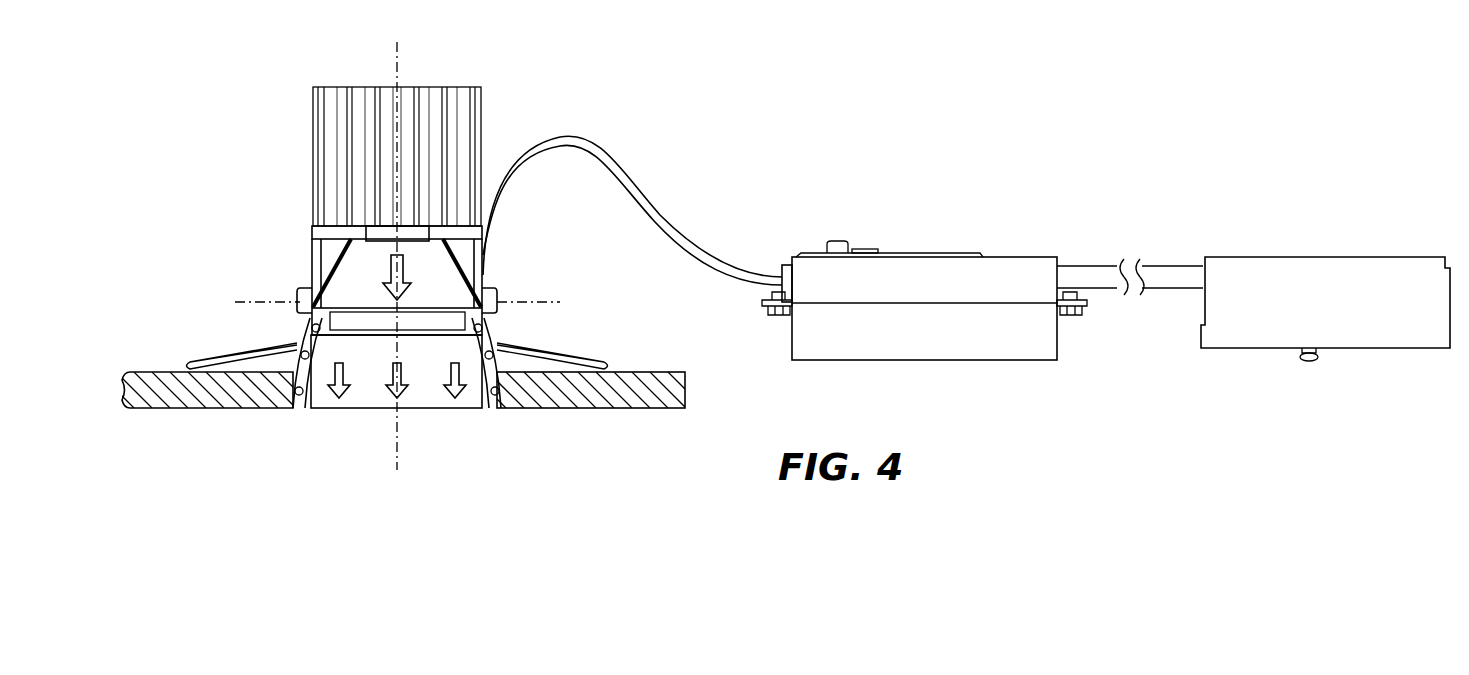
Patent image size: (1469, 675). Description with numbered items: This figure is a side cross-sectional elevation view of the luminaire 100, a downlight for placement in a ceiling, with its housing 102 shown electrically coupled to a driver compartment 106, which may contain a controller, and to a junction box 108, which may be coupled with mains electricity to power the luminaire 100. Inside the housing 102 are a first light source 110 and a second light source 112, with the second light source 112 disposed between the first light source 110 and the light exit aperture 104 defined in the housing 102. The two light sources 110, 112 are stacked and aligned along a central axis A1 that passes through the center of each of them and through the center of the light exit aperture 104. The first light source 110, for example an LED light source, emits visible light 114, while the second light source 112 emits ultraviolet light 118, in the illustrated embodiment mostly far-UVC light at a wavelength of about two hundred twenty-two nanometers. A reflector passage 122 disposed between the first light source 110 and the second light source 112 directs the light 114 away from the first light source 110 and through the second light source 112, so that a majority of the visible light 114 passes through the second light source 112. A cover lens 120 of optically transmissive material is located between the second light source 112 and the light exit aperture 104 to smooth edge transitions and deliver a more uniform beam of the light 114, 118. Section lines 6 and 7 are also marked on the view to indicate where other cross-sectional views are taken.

The luminaire 100 is at (550, 106).
The housing 102 is at (497, 407).
The light exit aperture 104 is at (426, 420).
The driver compartment 106 is at (940, 257).
The junction box 108 is at (1310, 257).
The first light source 110 is at (385, 232).
The second light source 112 is at (355, 320).
The light 114 is at (395, 270).
The light 118 is at (337, 400).
The cover lens 120 is at (452, 337).
The reflector passage 122 is at (485, 272).
The central axis A1 is at (397, 455).
The section line 6 is at (233, 302).
The section line 7 is at (286, 232).